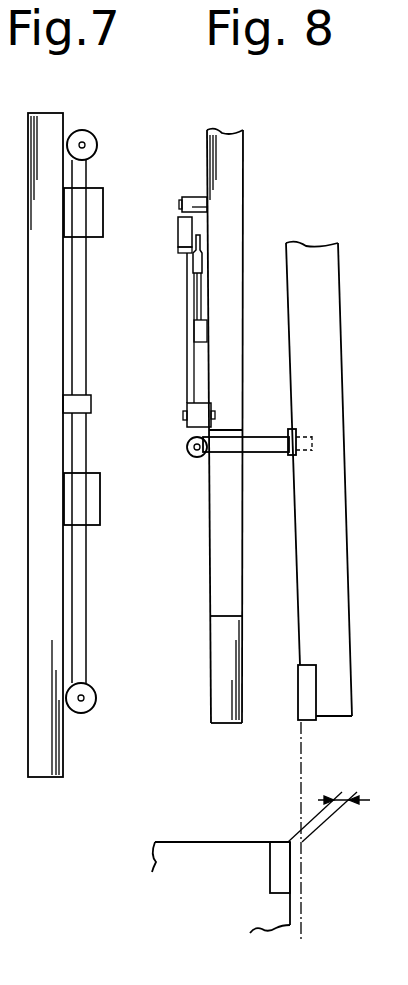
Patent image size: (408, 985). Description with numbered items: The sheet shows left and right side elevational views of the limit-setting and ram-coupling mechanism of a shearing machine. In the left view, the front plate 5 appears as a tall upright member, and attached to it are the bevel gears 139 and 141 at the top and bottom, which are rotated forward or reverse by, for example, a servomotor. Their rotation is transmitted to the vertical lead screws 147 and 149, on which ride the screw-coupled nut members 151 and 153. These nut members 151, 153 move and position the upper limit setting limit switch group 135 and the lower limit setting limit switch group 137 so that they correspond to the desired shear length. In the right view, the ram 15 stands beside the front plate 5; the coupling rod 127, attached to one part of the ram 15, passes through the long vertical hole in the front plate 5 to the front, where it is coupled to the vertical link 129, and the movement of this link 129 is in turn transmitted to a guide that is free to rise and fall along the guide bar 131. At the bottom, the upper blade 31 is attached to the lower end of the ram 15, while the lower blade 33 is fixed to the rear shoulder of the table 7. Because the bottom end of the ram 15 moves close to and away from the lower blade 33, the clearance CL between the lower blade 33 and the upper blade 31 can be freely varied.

In FIG. 7, the front plate 5 is at (36, 393).
In FIG. 8, the front plate 5 is at (232, 176).
In FIG. 8, the table 7 is at (193, 858).
In FIG. 8, the ram 15 is at (320, 410).
In FIG. 8, the upper blade 31 is at (313, 715).
In FIG. 8, the lower blade 33 is at (281, 855).
In FIG. 8, the coupling rod 127 is at (269, 453).
In FIG. 8, the vertical link 129 is at (190, 294).
In FIG. 8, the guide bar 131 is at (190, 371).
In FIG. 7, the upper limit setting limit switch group 135 is at (100, 237).
In FIG. 7, the lower limit setting limit switch group 137 is at (100, 505).
In FIG. 7, the bevel gear 139 is at (83, 144).
In FIG. 7, the bevel gear 141 is at (82, 697).
In FIG. 7, the vertical lead screw 147 is at (87, 345).
In FIG. 7, the vertical lead screw 149 is at (87, 593).
In FIG. 7, the nut member 151 is at (81, 211).
In FIG. 7, the nut member 153 is at (82, 492).
In FIG. 8, the clearance CL is at (329, 805).